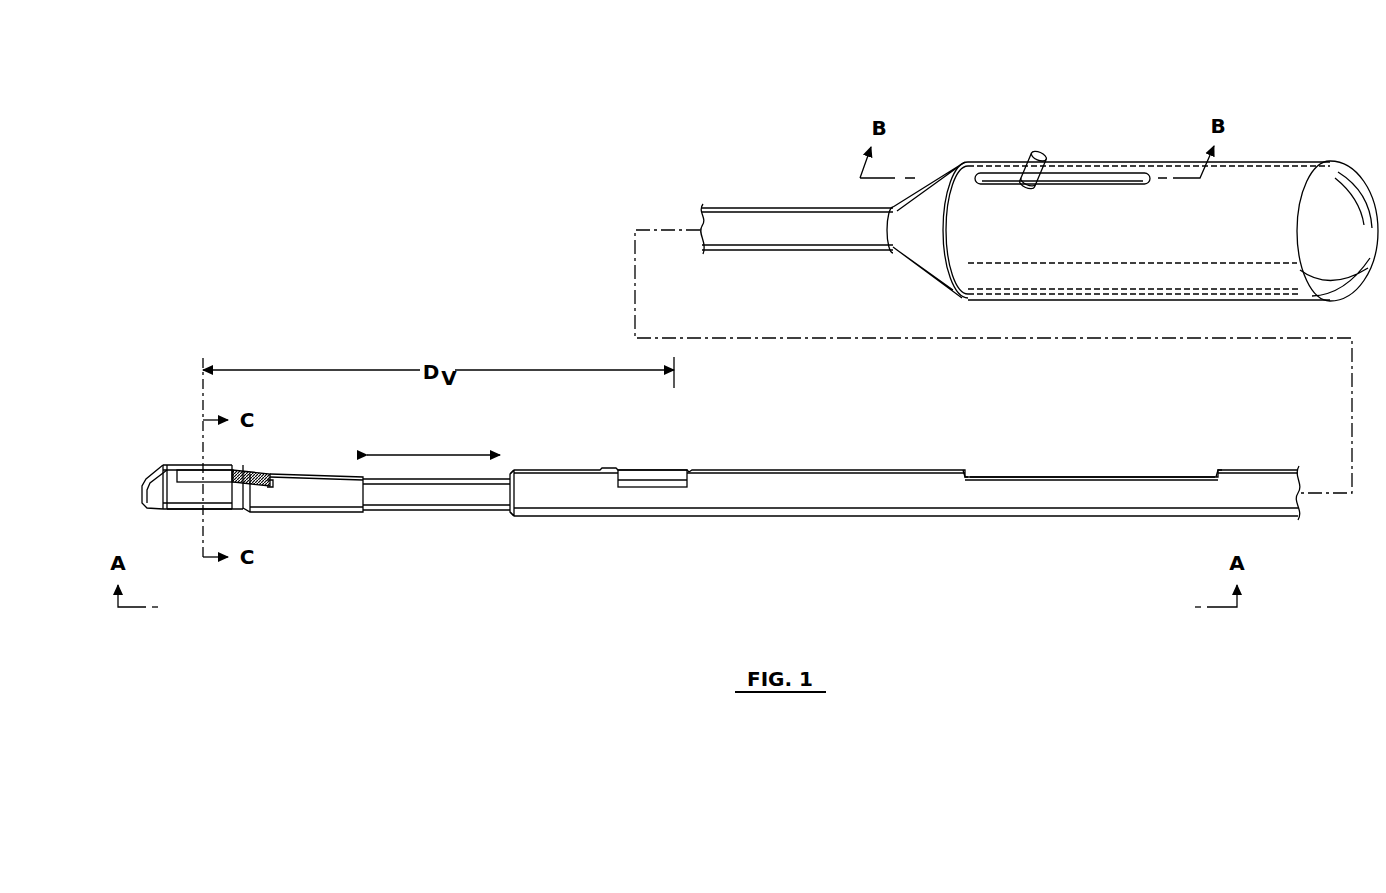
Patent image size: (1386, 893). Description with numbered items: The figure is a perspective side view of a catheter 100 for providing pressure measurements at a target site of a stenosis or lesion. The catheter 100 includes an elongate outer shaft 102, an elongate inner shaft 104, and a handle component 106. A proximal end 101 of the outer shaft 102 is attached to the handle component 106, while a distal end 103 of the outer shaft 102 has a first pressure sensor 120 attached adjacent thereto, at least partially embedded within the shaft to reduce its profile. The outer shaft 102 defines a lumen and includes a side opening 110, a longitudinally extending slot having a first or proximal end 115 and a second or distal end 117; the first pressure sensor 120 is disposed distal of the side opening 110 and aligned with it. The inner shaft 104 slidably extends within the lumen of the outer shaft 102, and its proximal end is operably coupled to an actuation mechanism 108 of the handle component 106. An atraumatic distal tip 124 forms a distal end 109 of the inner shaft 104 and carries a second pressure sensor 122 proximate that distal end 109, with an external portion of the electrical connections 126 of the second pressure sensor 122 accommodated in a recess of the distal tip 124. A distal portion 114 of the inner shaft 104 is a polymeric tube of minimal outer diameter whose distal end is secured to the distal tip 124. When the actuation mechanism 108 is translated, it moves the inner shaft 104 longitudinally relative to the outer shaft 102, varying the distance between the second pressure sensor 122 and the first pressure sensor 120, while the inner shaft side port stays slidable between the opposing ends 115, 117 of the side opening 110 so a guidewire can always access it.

The catheter 100 is at (408, 268).
The proximal end of outer shaft 101 is at (889, 238).
The outer shaft 102 is at (730, 222).
The distal end of outer shaft 103 is at (510, 516).
The inner shaft 104 is at (442, 478).
The handle component 106 is at (1257, 157).
The actuation mechanism 108 is at (1057, 148).
The distal end of inner shaft 109 is at (152, 484).
The side opening 110 is at (1090, 472).
The distal portion of inner shaft 114 is at (413, 497).
The first or proximal end of side opening 115 is at (1214, 468).
The second or distal end of side opening 117 is at (967, 476).
The first pressure sensor 120 is at (672, 468).
The second pressure sensor 122 is at (233, 468).
The atraumatic distal tip 124 is at (196, 520).
The electrical connections 126 is at (255, 478).